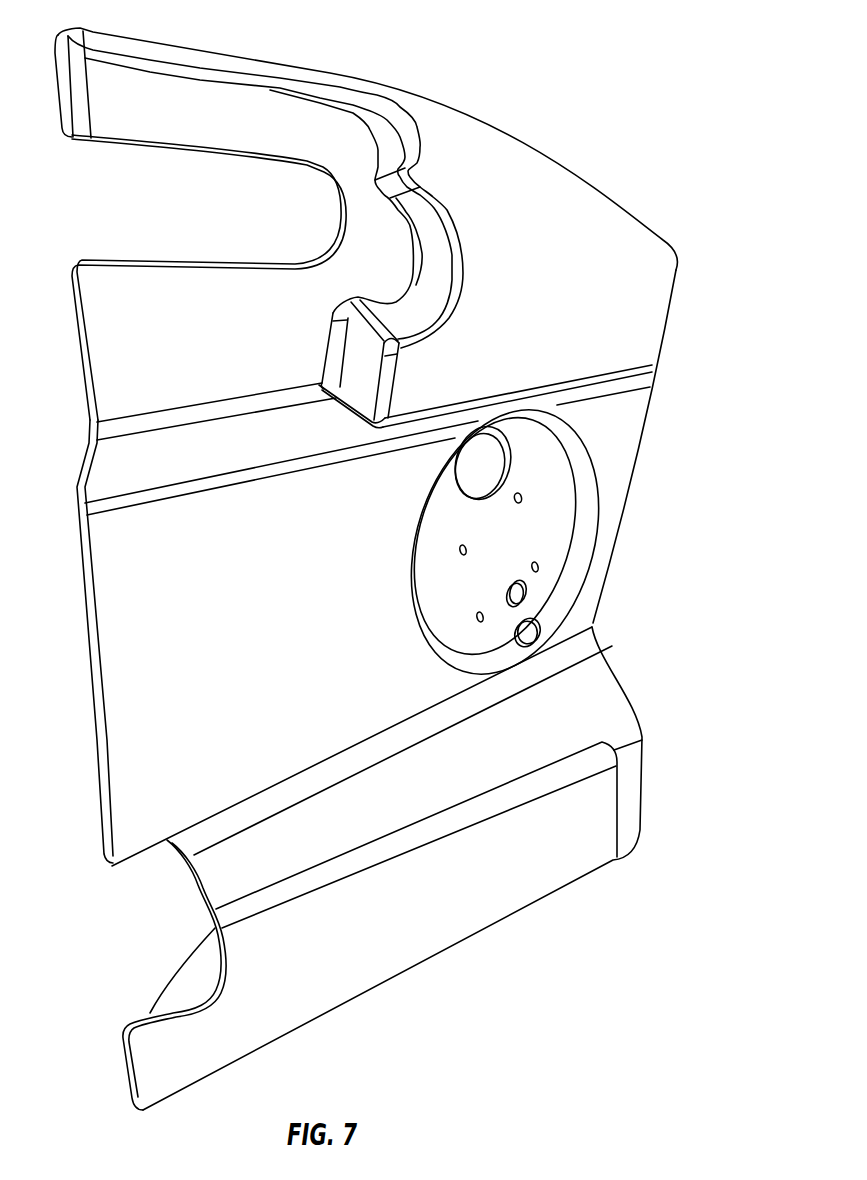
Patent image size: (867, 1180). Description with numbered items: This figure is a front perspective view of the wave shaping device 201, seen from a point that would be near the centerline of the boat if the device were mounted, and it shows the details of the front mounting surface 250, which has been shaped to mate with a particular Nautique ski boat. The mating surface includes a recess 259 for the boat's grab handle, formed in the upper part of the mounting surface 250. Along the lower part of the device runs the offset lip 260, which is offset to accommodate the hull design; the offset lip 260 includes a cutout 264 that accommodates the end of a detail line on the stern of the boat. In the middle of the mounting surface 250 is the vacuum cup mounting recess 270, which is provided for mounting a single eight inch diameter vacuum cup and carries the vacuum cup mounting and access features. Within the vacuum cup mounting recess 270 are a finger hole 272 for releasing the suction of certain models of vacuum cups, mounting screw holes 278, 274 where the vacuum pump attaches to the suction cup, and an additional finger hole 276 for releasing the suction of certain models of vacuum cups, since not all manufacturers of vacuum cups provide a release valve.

The wave shaping device 201 is at (141, 597).
The front mounting surface 250 is at (628, 308).
The recess for the grab handle 259 is at (434, 250).
The offset lip 260 is at (593, 855).
The cutout 264 is at (203, 957).
The vacuum cup mounting recess 270 is at (459, 551).
The finger hole 272 is at (492, 452).
The mounting screw hole 274 is at (524, 592).
The additional finger hole 276 is at (539, 634).
The mounting screw hole 278 is at (523, 498).